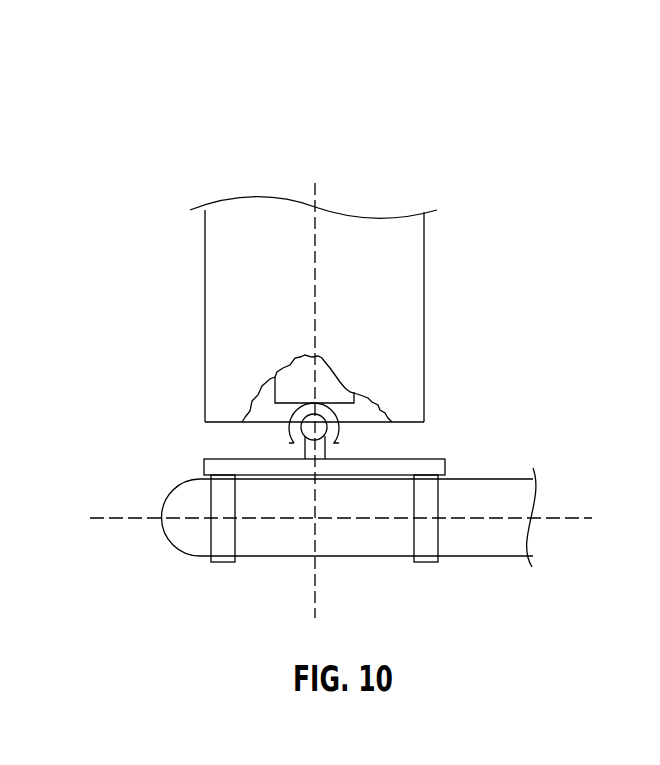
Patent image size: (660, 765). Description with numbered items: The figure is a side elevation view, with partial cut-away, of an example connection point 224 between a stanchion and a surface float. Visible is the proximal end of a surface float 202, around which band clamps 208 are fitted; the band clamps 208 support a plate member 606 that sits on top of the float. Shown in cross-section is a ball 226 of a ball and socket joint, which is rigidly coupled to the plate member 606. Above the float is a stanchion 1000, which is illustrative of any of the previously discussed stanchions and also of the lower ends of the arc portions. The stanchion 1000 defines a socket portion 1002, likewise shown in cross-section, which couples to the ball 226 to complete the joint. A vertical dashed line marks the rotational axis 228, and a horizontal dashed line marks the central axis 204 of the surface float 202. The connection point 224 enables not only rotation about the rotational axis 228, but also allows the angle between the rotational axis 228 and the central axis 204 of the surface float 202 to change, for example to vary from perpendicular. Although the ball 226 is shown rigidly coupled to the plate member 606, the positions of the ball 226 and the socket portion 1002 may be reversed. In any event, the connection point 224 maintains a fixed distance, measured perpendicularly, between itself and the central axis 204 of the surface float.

The rotational axis 228 is at (315, 183).
The stanchion 1000 is at (415, 250).
The socket portion 1002 is at (325, 412).
The ball 226 is at (308, 428).
The connection point 224 is at (232, 446).
The plate member 606 is at (425, 459).
The surface float 202 is at (178, 537).
The central axis 204 is at (572, 517).
The band clamps 208 is at (223, 555).